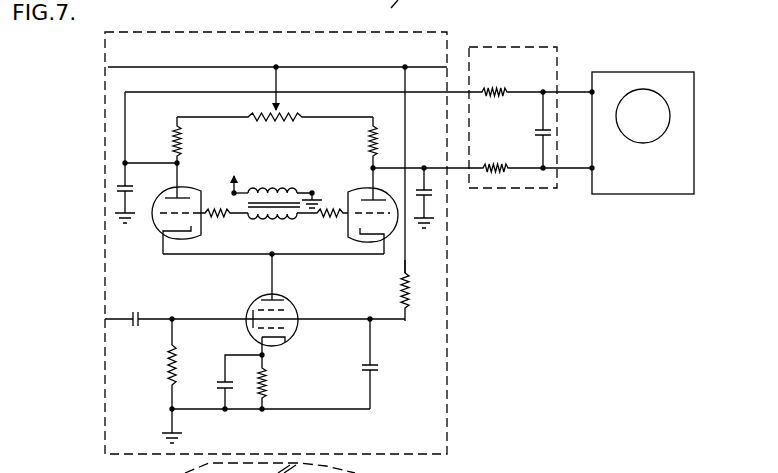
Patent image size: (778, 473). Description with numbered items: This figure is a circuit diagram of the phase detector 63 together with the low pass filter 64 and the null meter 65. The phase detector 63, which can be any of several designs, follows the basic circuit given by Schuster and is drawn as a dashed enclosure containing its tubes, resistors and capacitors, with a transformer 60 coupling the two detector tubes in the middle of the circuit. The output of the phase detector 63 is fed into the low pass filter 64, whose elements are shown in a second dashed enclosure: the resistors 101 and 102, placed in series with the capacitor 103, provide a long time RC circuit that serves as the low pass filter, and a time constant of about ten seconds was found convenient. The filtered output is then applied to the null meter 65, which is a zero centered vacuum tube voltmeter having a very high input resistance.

The phase detector 63 is at (172, 31).
The low pass filter 64 is at (557, 47).
The null meter 65 is at (643, 72).
The transformer 60 is at (300, 168).
The resistor 101 is at (497, 97).
The resistor 102 is at (487, 162).
The capacitor 103 is at (543, 126).